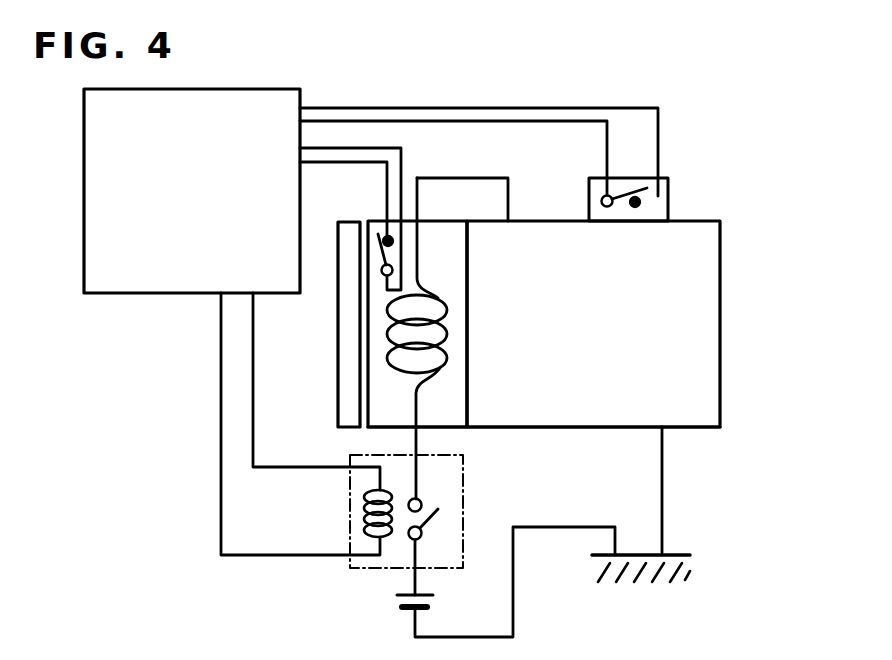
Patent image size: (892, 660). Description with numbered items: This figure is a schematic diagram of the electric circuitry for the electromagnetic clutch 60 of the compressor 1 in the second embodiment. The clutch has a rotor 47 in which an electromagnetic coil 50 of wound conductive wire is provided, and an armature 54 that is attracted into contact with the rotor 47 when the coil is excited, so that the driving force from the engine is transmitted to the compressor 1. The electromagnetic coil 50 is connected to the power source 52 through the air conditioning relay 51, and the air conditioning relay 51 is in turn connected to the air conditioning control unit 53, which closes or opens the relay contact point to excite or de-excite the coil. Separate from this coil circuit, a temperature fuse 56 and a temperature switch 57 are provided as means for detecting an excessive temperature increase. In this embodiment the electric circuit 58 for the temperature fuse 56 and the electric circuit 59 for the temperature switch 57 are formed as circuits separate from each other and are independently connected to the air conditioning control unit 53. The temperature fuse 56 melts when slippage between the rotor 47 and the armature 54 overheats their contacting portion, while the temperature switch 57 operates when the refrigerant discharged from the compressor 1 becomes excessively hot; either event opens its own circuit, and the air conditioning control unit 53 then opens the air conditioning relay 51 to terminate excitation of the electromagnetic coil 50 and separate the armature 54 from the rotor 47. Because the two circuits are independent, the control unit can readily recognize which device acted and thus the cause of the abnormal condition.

The compressor 1 is at (693, 292).
The rotor 47 is at (387, 388).
The electromagnetic coil 50 is at (445, 341).
The air conditioning relay 51 is at (347, 520).
The power source 52 is at (397, 600).
The air conditioning control unit 53 is at (131, 296).
The armature 54 is at (347, 330).
The temperature fuse 56 is at (390, 255).
The temperature switch 57 is at (670, 193).
The electric circuit 58 is at (403, 160).
The electric circuit 59 is at (641, 108).
The electromagnetic clutch 60 is at (443, 428).